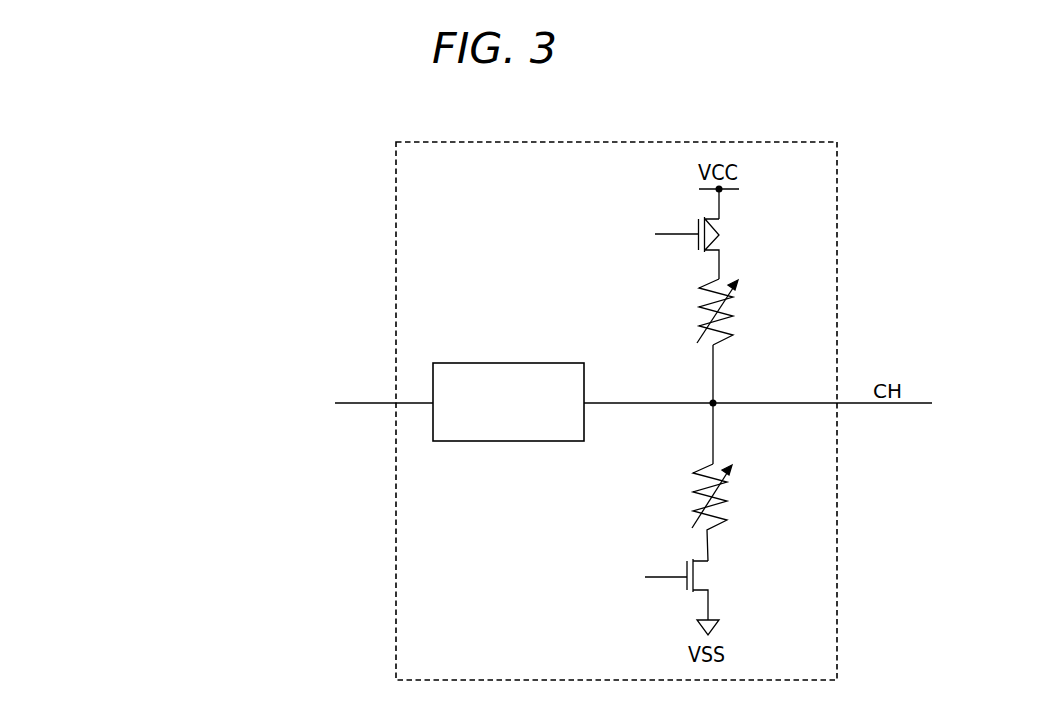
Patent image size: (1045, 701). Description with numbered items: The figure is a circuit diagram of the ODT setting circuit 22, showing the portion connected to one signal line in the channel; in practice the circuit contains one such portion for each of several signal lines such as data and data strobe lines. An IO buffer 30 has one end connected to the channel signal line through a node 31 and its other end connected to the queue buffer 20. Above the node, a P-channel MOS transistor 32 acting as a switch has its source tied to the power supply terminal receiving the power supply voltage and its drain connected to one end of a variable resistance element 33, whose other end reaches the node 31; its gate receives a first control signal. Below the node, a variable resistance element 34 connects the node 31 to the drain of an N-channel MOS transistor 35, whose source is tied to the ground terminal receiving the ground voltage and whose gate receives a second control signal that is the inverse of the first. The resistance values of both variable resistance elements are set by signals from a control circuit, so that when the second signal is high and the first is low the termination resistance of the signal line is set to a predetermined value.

The queue buffer 20 is at (236, 405).
The ODT setting circuit 22 is at (790, 141).
The IO buffer 30 is at (512, 363).
The node 31 is at (712, 403).
The P-channel MOS transistor 32 is at (731, 237).
The variable resistance element 33 is at (746, 309).
The variable resistance element 34 is at (741, 499).
The N-channel MOS transistor 35 is at (719, 580).